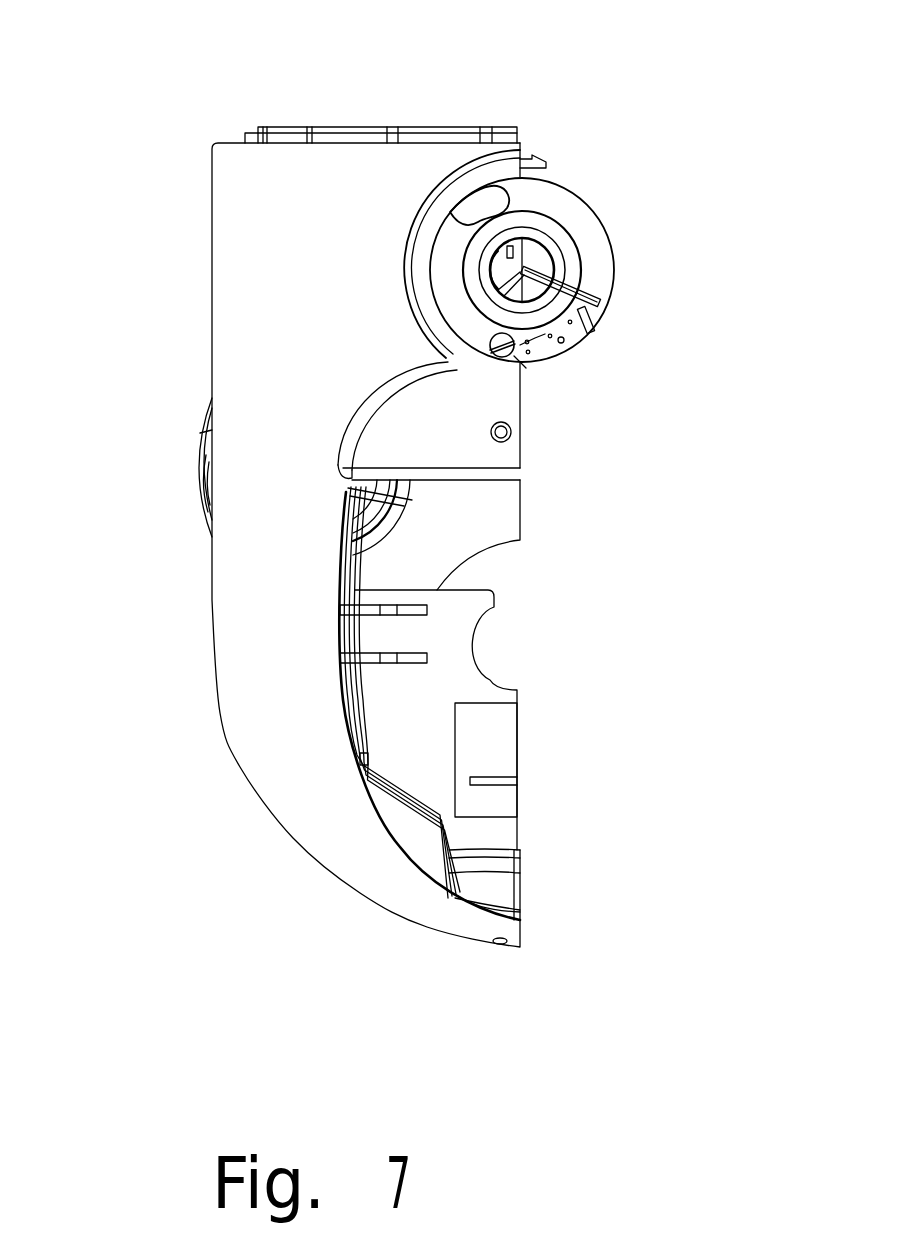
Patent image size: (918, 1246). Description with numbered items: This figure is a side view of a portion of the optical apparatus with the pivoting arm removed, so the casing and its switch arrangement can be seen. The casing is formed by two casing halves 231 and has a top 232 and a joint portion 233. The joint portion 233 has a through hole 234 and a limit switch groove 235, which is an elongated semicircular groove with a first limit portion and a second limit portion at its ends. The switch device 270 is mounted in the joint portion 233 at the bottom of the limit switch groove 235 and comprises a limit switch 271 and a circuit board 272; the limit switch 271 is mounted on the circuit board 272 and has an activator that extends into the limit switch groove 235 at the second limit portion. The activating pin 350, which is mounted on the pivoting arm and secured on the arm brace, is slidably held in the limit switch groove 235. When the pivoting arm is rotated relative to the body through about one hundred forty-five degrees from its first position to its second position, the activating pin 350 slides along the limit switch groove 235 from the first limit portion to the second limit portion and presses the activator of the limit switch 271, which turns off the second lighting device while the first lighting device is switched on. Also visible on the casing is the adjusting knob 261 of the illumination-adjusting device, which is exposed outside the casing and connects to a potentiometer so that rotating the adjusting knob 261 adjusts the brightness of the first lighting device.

The casing half 231 is at (227, 308).
The top 232 is at (232, 140).
The joint portion 233 is at (555, 200).
The through hole 234 is at (537, 260).
The limit switch groove 235 is at (477, 203).
The adjusting knob 261 is at (198, 468).
The switch device 270 is at (563, 368).
The limit switch 271 is at (520, 362).
The circuit board 272 is at (622, 322).
The activating pin 350 is at (500, 355).